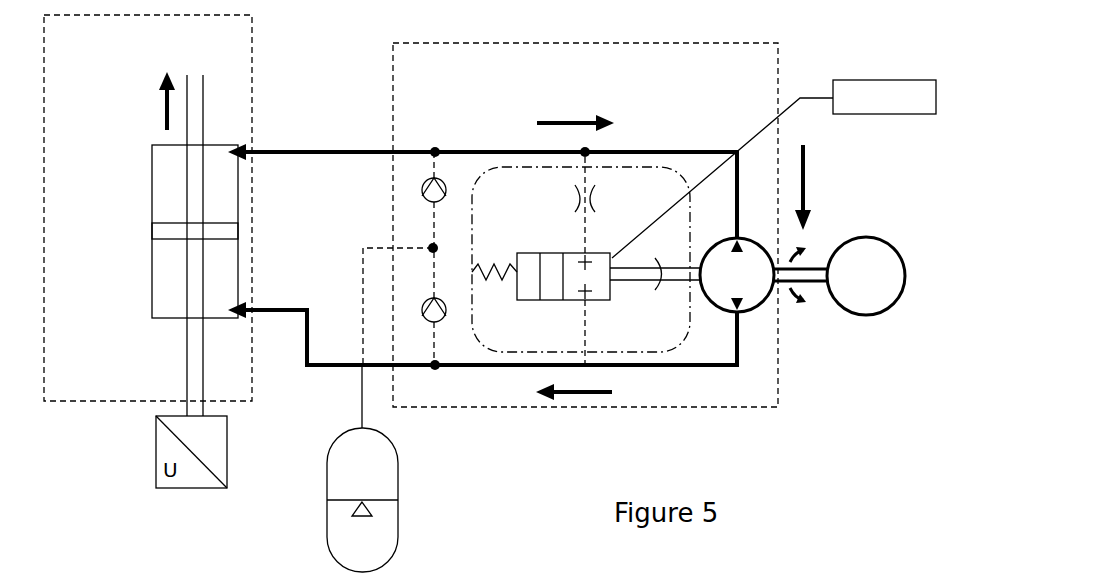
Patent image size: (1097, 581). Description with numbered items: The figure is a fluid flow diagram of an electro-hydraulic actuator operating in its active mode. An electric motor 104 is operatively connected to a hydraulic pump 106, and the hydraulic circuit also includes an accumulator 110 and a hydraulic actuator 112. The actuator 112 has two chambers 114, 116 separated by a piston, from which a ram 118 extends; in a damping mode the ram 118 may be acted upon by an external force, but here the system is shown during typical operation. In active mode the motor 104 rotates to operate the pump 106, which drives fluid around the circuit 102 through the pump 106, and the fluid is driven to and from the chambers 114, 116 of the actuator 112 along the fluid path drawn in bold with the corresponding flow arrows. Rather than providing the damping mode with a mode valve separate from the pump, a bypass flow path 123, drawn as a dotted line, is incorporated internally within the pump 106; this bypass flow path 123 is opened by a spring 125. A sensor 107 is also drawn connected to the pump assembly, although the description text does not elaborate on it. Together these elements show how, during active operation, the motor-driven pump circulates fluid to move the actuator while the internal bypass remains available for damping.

The circuit 102 is at (575, 243).
The electric motor 104 is at (852, 300).
The hydraulic pump 106 is at (755, 413).
The sensor 107 is at (880, 80).
The accumulator 110 is at (388, 463).
The hydraulic actuator 112 is at (116, 407).
The chamber 114 is at (177, 173).
The chamber 116 is at (168, 290).
The ram 118 is at (197, 122).
The bypass flow path 123 is at (598, 207).
The spring 125 is at (487, 262).